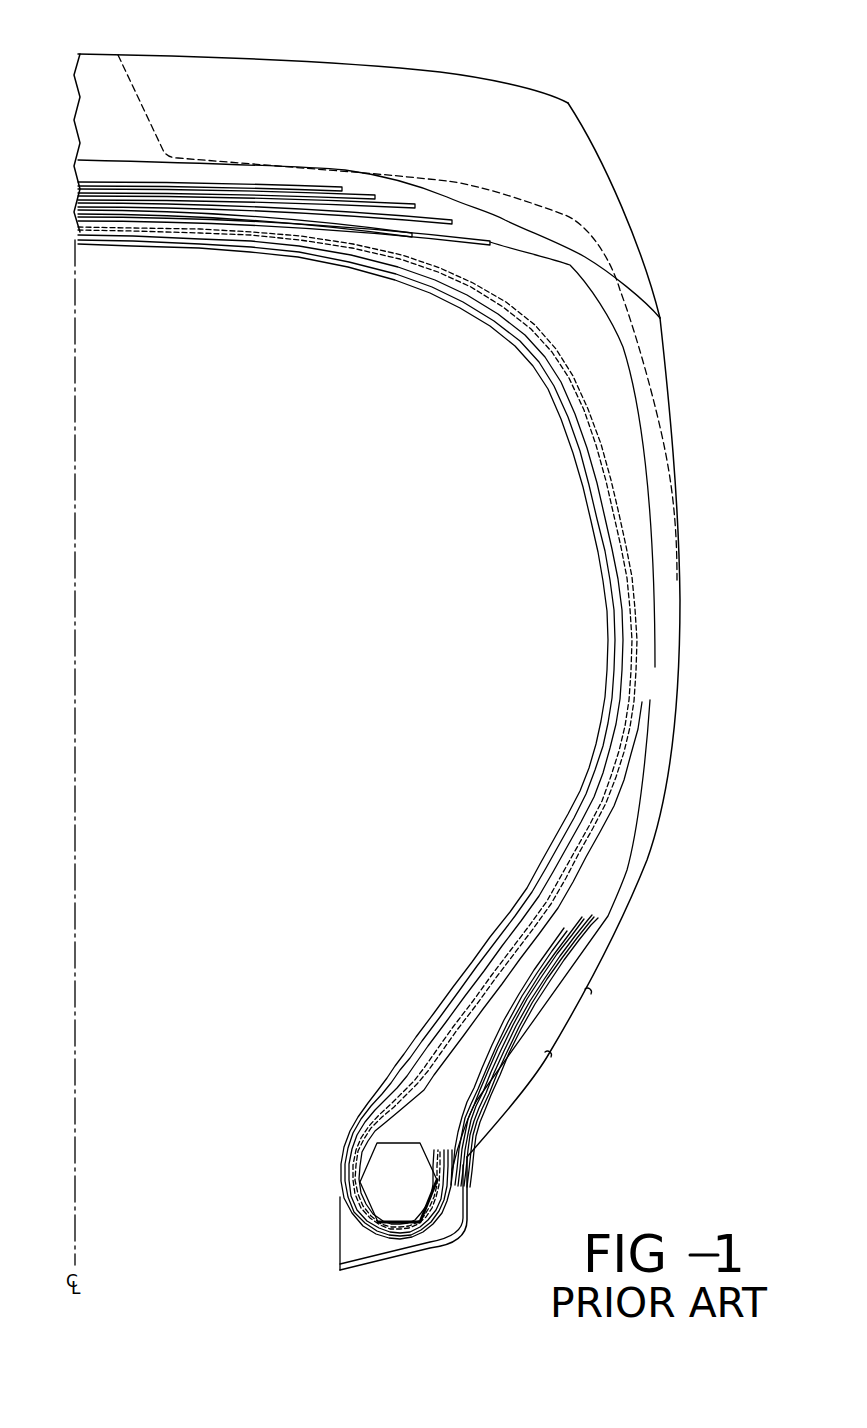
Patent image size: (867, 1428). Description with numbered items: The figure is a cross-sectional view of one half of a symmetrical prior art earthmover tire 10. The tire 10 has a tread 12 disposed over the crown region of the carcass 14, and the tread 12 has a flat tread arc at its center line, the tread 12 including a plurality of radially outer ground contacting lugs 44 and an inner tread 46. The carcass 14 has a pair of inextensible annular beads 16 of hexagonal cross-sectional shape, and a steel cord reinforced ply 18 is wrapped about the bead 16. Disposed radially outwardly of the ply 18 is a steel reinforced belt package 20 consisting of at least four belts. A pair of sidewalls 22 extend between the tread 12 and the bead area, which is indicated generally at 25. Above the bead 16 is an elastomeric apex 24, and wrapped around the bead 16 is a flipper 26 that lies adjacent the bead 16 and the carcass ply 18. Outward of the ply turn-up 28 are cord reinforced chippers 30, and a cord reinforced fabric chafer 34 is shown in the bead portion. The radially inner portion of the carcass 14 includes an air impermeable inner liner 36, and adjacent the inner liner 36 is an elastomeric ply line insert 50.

The earthmover tire 10 is at (702, 262).
The tread 12 is at (437, 103).
The carcass 14 is at (447, 1043).
The bead 16 is at (400, 1188).
The steel cord reinforced ply 18 is at (398, 1083).
The steel reinforced belt package 20 is at (255, 203).
The sidewall 22 is at (653, 452).
The elastomeric apex 24 is at (407, 1117).
The bead portion 25 is at (316, 1144).
The flipper 26 is at (432, 1195).
The ply turn-up 28 is at (533, 1010).
The cord reinforced chipper 30 is at (470, 1103).
The cord reinforced fabric chafer 34 is at (377, 1257).
The inner liner 36 is at (567, 840).
The ground contacting lug 44 is at (303, 90).
The inner tread 46 is at (367, 170).
The elastomeric ply line insert 50 is at (618, 637).